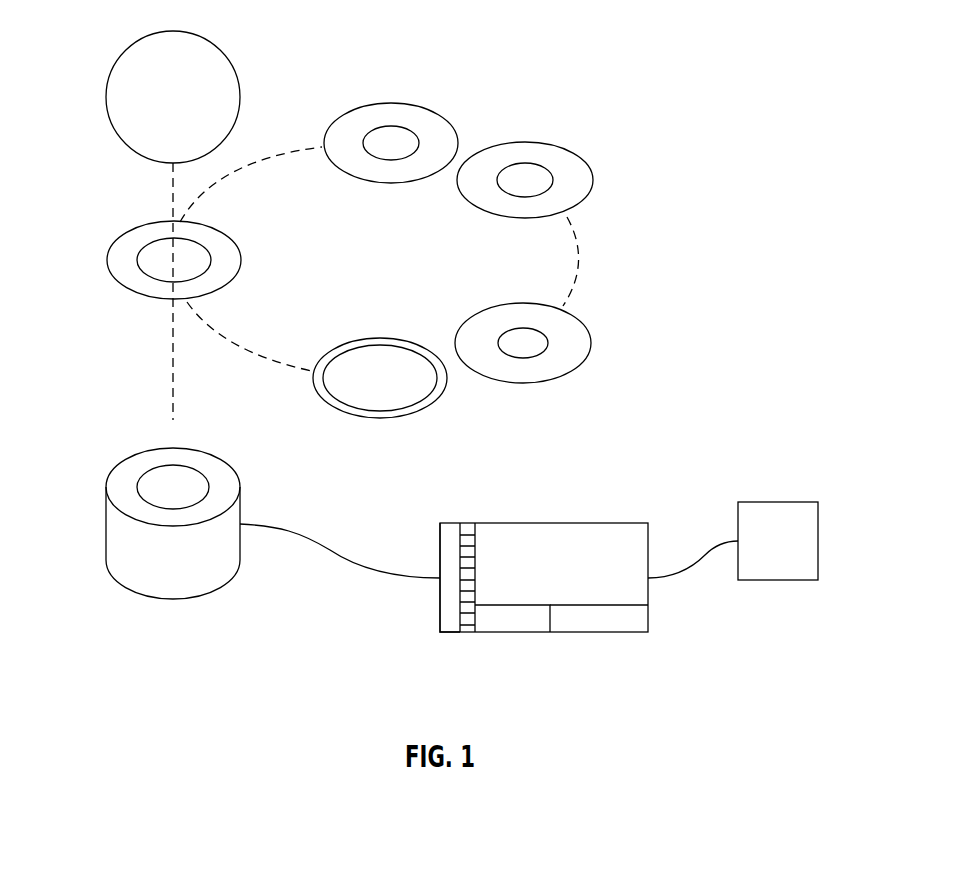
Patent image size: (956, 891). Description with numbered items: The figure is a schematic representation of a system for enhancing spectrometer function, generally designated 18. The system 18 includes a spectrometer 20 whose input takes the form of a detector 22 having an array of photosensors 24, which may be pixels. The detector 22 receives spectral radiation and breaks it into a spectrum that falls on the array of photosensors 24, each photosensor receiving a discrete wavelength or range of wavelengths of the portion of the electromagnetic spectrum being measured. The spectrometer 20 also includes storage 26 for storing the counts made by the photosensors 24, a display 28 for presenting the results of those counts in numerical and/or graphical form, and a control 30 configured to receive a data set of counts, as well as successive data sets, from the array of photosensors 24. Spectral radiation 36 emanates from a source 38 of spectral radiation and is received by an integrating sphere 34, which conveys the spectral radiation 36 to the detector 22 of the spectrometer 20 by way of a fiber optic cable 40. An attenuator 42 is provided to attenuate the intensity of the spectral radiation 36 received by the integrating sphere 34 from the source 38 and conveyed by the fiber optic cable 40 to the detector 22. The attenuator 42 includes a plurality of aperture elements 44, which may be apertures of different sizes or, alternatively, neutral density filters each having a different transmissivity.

The system for enhancing spectrometer function 18 is at (652, 343).
The spectrometer 20 is at (630, 523).
The detector 22 is at (460, 540).
The array of photosensors 24 is at (467, 632).
The storage 26 is at (510, 620).
The display 28 is at (597, 620).
The control 30 is at (797, 502).
The integrating sphere 34 is at (106, 532).
The spectral radiation 36 is at (173, 390).
The source of spectral radiation 38 is at (135, 42).
The fiber optic cable 40 is at (352, 562).
The attenuator 42 is at (512, 92).
The aperture elements 44 is at (593, 180).